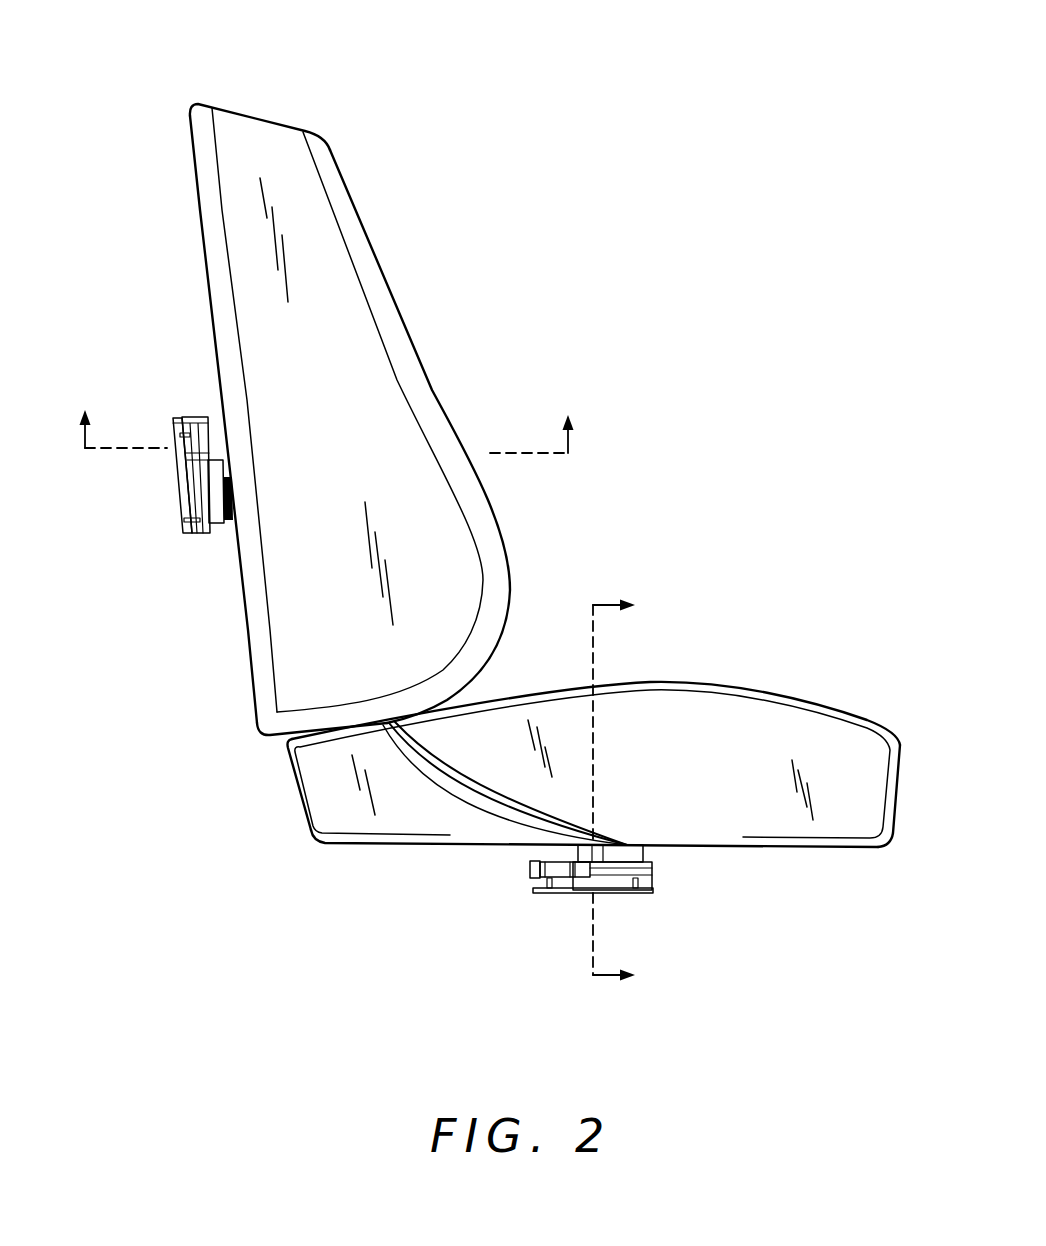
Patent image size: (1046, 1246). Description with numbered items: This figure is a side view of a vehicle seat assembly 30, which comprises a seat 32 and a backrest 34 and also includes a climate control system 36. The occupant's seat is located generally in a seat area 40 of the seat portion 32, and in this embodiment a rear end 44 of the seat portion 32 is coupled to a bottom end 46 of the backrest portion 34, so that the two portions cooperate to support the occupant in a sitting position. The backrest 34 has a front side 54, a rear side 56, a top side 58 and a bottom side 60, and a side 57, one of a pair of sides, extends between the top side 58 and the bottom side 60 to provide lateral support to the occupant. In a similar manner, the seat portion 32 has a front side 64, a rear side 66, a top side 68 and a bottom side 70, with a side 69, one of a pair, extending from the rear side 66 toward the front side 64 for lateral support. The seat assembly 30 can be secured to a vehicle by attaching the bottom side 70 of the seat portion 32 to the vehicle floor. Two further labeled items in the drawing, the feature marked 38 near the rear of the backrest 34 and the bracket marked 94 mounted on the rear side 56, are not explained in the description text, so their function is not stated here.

The seat assembly 30 is at (438, 90).
The seat 32 is at (691, 645).
The backrest 34 is at (423, 265).
The climate control system 36 is at (205, 582).
The pivot mounting region 38 is at (152, 550).
The seat area 40 is at (164, 274).
The rear end 44 is at (370, 755).
The bottom end 46 is at (337, 717).
The front side 54 is at (519, 494).
The rear side 56 is at (163, 372).
The side 57 is at (320, 243).
The top side 58 is at (282, 77).
The bottom side 60 is at (259, 755).
The front side 64 is at (917, 782).
The rear side 66 is at (280, 825).
The top side 68 is at (570, 663).
The side 69 is at (705, 727).
The bottom side 70 is at (722, 866).
The backrest mounting bracket 94 is at (182, 507).